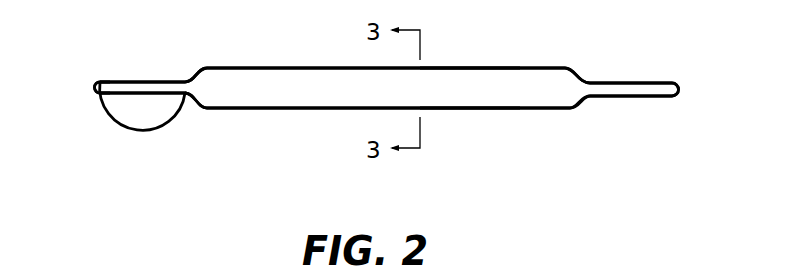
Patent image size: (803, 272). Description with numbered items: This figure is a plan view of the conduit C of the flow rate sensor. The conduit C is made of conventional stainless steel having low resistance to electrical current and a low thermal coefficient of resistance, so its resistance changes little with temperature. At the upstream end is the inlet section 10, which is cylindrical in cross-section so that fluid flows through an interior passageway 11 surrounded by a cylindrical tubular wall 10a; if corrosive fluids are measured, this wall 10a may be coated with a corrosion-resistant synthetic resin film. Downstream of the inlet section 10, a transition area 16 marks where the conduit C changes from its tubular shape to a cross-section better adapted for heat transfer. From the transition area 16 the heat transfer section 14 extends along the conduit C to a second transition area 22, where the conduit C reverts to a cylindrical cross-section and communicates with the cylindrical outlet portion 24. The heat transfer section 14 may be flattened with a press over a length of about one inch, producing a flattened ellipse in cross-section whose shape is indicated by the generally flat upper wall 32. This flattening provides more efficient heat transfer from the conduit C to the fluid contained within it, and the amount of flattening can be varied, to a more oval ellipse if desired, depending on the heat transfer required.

The conduit C is at (338, 153).
The inlet section 10 is at (120, 95).
The cylindrical tubular wall 10a is at (100, 89).
The interior passageway 11 is at (98, 93).
The transition area 16 is at (192, 106).
The heat transfer section 14 is at (263, 95).
The flat upper wall 32 is at (483, 101).
The second transition area 22 is at (580, 106).
The cylindrical outlet portion 24 is at (642, 95).